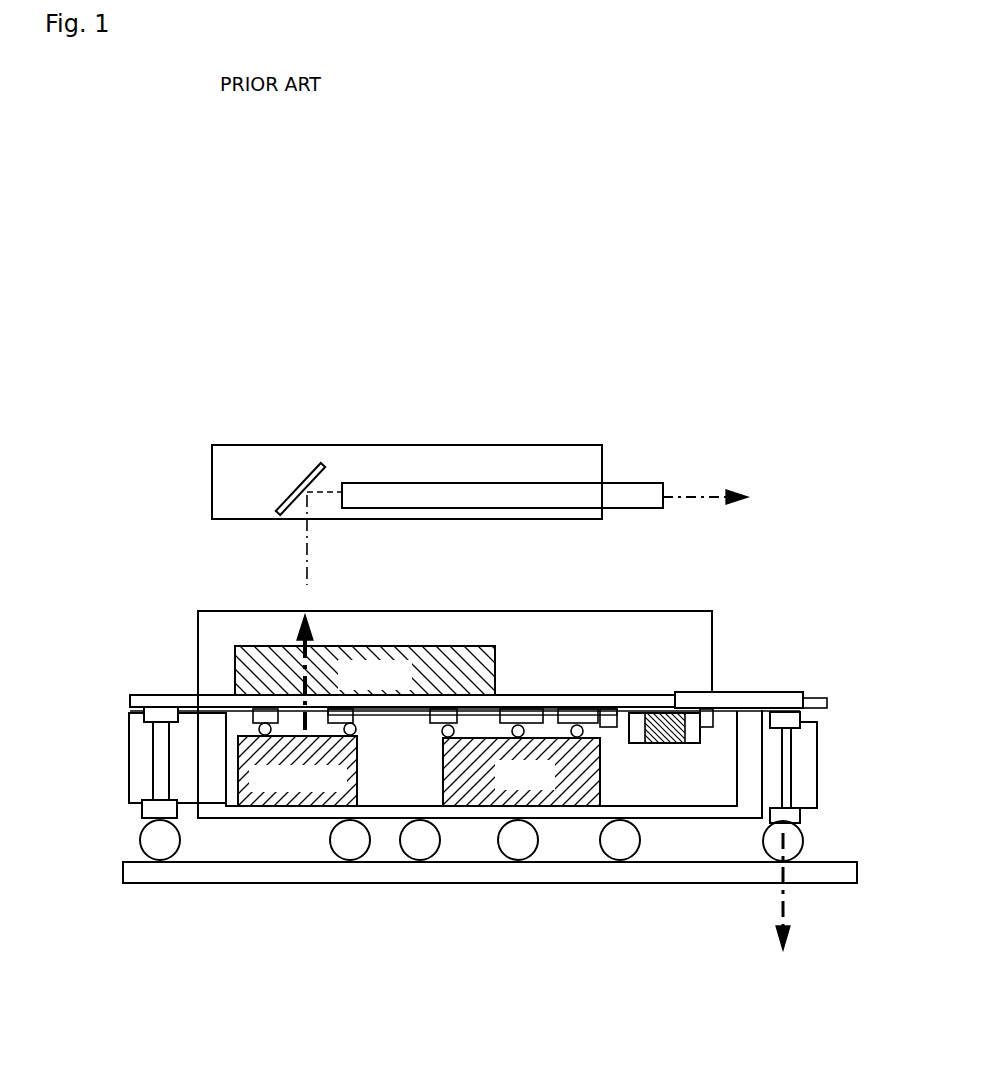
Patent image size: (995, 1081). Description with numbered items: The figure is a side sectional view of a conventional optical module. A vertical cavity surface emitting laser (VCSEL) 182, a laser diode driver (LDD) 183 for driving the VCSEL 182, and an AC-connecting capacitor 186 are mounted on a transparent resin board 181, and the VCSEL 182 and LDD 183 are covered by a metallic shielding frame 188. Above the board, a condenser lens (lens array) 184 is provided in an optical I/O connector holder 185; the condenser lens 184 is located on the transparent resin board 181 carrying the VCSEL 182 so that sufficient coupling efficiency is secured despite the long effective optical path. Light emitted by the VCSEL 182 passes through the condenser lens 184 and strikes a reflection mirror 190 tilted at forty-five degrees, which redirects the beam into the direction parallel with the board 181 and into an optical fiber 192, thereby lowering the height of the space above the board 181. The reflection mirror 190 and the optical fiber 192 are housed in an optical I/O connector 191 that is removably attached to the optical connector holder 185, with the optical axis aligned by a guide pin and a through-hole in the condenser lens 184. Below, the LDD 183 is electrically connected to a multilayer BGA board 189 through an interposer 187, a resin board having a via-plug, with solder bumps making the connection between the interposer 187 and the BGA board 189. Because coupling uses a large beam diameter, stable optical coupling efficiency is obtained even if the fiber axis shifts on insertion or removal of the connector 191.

The transparent resin board 181 is at (175, 697).
The vertical cavity surface emitting laser (VCSEL) 182 is at (300, 797).
The laser diode driver (LDD) 183 is at (580, 806).
The condenser lens (lens array) 184 is at (407, 650).
The optical I/O connector holder 185 is at (652, 612).
The AC-connecting capacitor 186 is at (688, 710).
The interposer 187 is at (800, 772).
The metallic shielding frame 188 is at (248, 813).
The BGA board 189 is at (478, 880).
The reflection mirror 190 is at (295, 483).
The optical I/O connector 191 is at (480, 458).
The optical fiber 192 is at (655, 483).